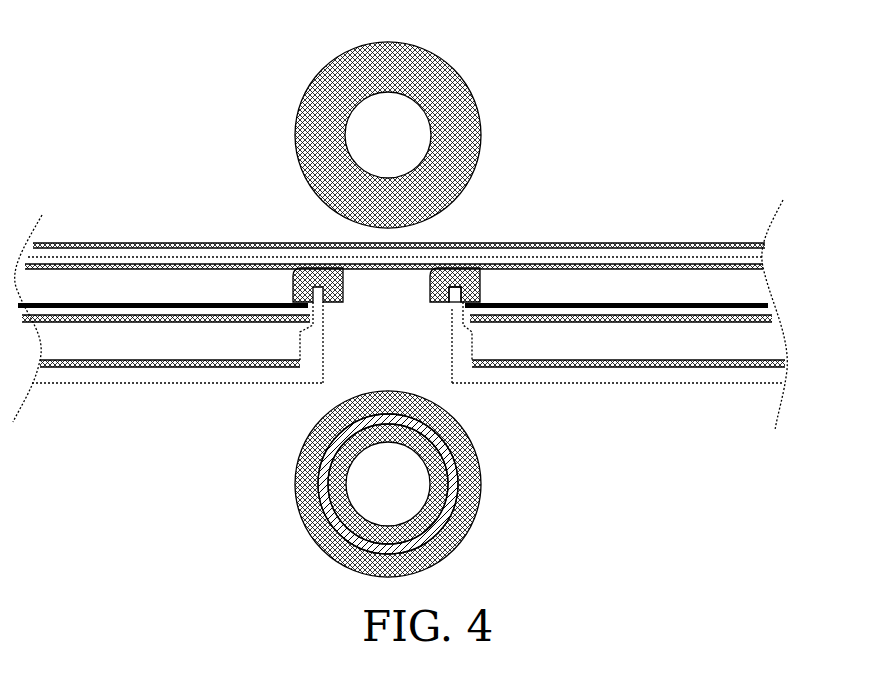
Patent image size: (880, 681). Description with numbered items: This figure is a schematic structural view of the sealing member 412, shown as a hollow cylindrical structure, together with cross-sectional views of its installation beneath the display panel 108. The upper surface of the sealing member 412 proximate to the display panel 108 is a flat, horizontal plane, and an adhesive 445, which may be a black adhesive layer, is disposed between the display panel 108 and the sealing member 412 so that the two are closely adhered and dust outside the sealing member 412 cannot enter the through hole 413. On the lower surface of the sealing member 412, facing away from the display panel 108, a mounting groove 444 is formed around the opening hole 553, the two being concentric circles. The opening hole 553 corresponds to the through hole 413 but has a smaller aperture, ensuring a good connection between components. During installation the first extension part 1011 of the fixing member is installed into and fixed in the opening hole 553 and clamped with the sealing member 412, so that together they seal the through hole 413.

The opening hole 553 is at (395, 120).
The mounting groove 444 is at (455, 458).
The display panel 108 is at (747, 260).
The adhesive 445 is at (305, 270).
The sealing member 412 is at (482, 288).
The first extension part 1011 is at (455, 290).
The through hole 413 is at (378, 310).